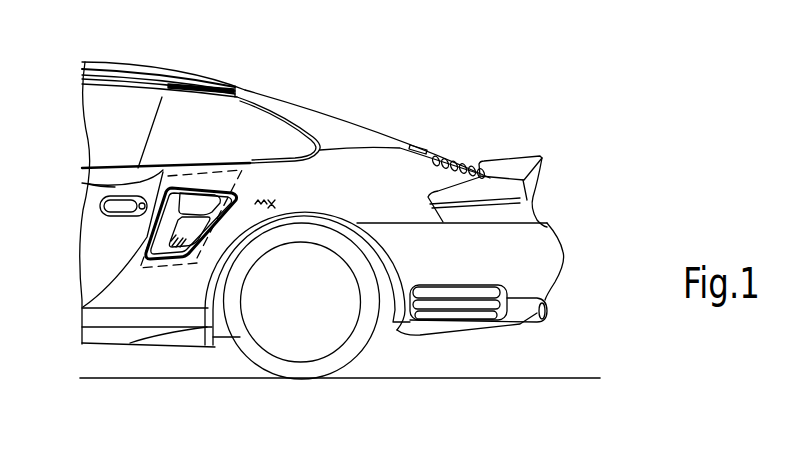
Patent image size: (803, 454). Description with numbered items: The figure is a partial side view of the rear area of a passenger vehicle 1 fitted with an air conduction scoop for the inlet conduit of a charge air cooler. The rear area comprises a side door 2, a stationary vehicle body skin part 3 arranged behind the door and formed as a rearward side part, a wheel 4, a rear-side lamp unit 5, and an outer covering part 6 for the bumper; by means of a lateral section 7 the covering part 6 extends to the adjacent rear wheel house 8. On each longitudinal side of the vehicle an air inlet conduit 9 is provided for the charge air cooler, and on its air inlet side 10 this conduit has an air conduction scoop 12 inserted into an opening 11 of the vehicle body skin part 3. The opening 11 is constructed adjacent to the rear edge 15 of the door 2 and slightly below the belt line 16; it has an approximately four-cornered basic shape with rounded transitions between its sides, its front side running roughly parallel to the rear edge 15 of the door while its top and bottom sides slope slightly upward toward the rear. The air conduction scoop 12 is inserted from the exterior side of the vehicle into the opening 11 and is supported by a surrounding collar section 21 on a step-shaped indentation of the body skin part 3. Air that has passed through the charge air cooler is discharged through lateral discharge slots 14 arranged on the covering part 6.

The vehicle 1 is at (208, 77).
The side door 2 is at (107, 257).
The vehicle body skin part 3 is at (134, 300).
The wheel 4 is at (308, 340).
The rear-side lamp unit 5 is at (510, 212).
The outer covering part 6 is at (563, 252).
The lateral section 7 is at (512, 277).
The rear wheel house 8 is at (384, 303).
The air inlet conduit 9 is at (151, 189).
The air inlet side 10 is at (138, 230).
The opening 11 is at (199, 200).
The air conduction scoop 12 is at (258, 188).
The lateral discharge slot 14 is at (461, 311).
The rear edge 15 is at (88, 184).
The belt line 16 is at (256, 159).
The collar section 21 is at (184, 262).